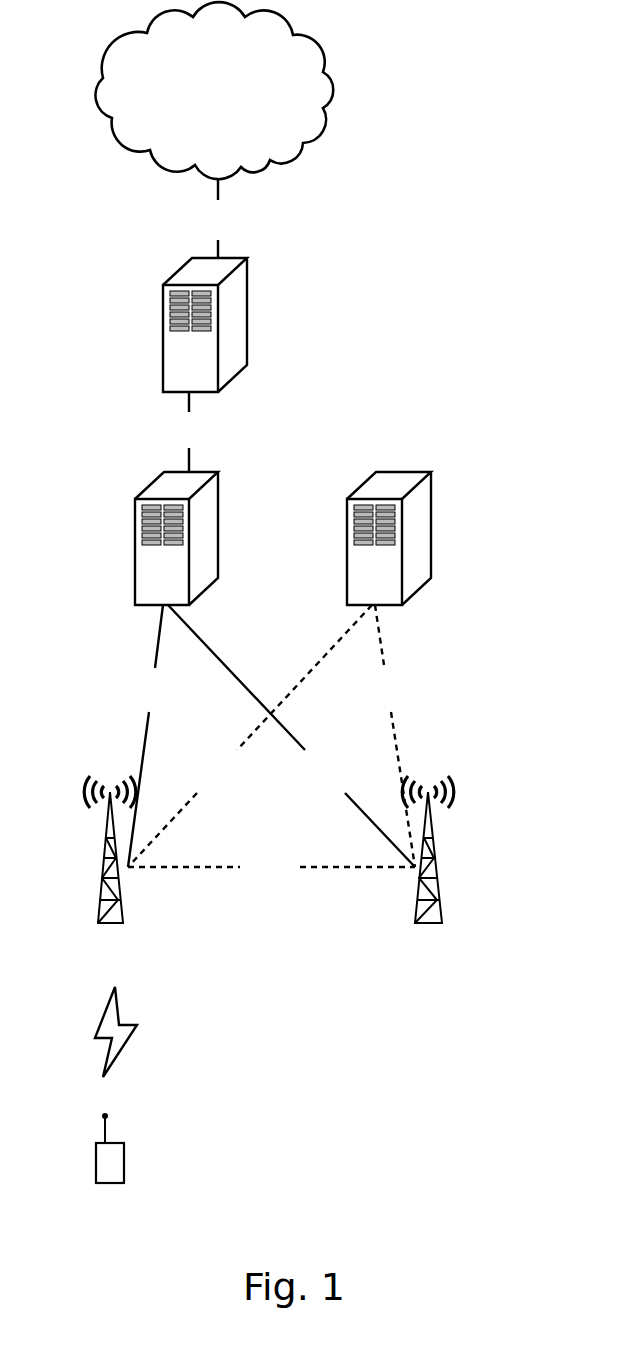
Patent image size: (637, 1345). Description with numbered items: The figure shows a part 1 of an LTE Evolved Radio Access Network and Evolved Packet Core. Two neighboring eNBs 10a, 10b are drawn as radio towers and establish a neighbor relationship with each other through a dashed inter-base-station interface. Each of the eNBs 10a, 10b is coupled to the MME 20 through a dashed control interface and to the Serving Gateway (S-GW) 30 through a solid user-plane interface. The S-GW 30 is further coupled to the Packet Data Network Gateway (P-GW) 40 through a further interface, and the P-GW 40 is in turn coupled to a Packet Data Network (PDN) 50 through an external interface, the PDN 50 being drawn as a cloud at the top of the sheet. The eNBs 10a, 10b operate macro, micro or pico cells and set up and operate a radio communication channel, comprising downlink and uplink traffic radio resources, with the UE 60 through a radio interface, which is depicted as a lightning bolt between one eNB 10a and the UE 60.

The part of an Evolved Radio Access Network and Evolved Packet Core 1 is at (473, 992).
The eNB 10a is at (98, 923).
The eNB 10b is at (442, 923).
The MME 20 is at (402, 605).
The Serving Gateway (S-GW) 30 is at (135, 605).
The Packet Data Network Gateway (P-GW) 40 is at (163, 392).
The Packet Data Network (PDN) 50 is at (103, 85).
The UE 60 is at (96, 1183).